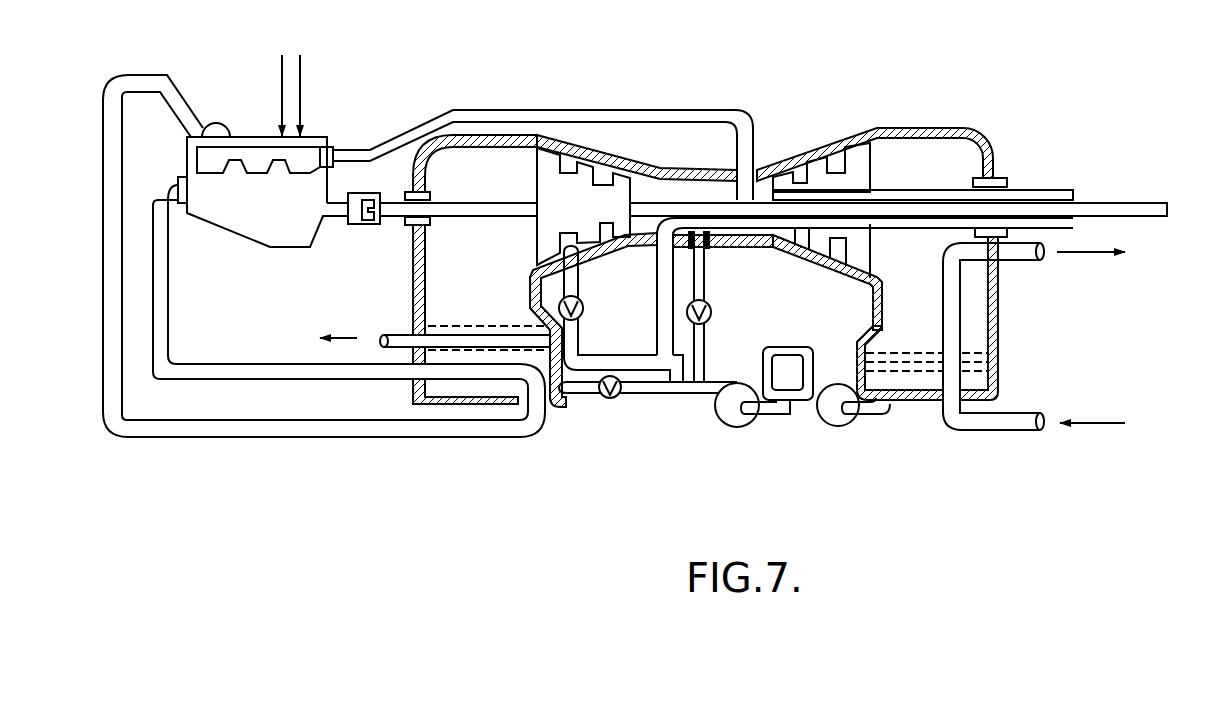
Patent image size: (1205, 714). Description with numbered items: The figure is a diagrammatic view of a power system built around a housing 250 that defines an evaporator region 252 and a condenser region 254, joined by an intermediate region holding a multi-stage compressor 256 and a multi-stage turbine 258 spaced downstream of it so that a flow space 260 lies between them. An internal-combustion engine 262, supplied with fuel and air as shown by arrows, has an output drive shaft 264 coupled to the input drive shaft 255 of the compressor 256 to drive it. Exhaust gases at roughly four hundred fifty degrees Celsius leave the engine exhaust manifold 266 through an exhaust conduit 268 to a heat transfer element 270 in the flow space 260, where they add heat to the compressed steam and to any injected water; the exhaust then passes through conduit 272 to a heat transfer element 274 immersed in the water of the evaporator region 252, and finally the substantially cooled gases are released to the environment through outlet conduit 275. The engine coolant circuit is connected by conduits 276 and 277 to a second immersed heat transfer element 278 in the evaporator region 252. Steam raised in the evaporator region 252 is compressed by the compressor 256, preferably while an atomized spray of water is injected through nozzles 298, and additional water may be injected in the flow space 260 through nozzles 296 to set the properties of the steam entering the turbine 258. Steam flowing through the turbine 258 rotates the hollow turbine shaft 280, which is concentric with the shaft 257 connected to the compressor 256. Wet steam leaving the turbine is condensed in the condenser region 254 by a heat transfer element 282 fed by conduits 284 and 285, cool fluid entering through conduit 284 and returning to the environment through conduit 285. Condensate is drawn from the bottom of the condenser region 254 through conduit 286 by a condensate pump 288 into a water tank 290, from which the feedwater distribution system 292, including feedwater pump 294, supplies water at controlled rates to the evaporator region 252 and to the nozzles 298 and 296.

The housing 250 is at (983, 135).
The evaporator region 252 is at (465, 288).
The condenser region 254 is at (907, 318).
The input drive shaft 255 is at (488, 210).
The multi-stage compressor 256 is at (614, 200).
The shaft 257 is at (1127, 206).
The multi-stage turbine 258 is at (822, 182).
The flow space 260 is at (735, 228).
The internal-combustion engine 262 is at (230, 229).
The output drive shaft 264 is at (338, 208).
The engine exhaust manifold 266 is at (247, 160).
The exhaust conduit 268 is at (550, 114).
The heat transfer element 270 is at (723, 199).
The conduit 272 is at (660, 337).
The heat transfer element 274 is at (453, 340).
The outlet conduit 275 is at (380, 344).
The conduit 276 is at (163, 427).
The conduit 277 is at (192, 368).
The heat transfer element 278 is at (460, 373).
The turbine shaft 280 is at (1043, 197).
The heat transfer element 282 is at (952, 331).
The conduit 284 is at (1002, 422).
The conduit 285 is at (1014, 254).
The conduit 286 is at (864, 410).
The condensate pump 288 is at (834, 418).
The water tank 290 is at (795, 401).
The feedwater distribution system 292 is at (680, 404).
The feedwater pump 294 is at (733, 418).
The water-injection nozzles 296 is at (709, 246).
The water-injection nozzles 298 is at (580, 252).